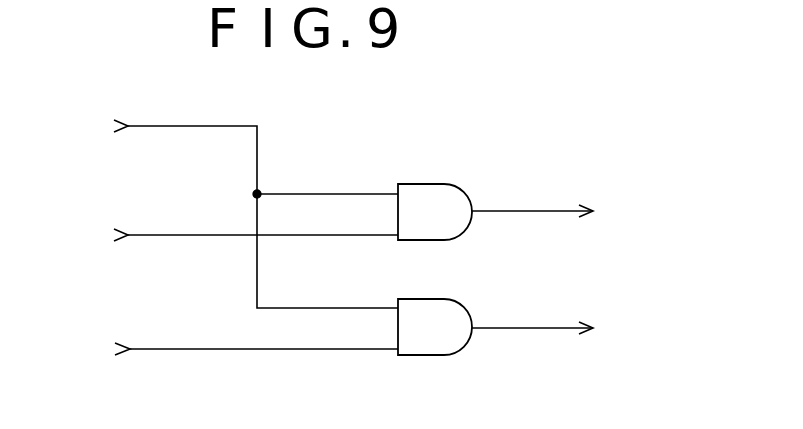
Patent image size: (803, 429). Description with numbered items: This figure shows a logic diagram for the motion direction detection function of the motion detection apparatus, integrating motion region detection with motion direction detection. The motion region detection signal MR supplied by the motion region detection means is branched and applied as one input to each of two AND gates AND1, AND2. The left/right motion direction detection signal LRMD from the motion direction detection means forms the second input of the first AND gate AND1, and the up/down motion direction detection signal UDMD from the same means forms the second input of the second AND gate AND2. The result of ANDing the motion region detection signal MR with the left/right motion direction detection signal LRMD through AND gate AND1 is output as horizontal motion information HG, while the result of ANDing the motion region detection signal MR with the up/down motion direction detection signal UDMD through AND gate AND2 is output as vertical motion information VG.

The motion region detection signal MR is at (224, 211).
The left/right motion direction detection signal LRMD is at (209, 236).
The up/down motion direction detection signal UDMD is at (213, 350).
The AND gate AND1 is at (435, 212).
The AND gate AND2 is at (435, 327).
The horizontal motion information HG is at (556, 212).
The vertical motion information VG is at (553, 329).